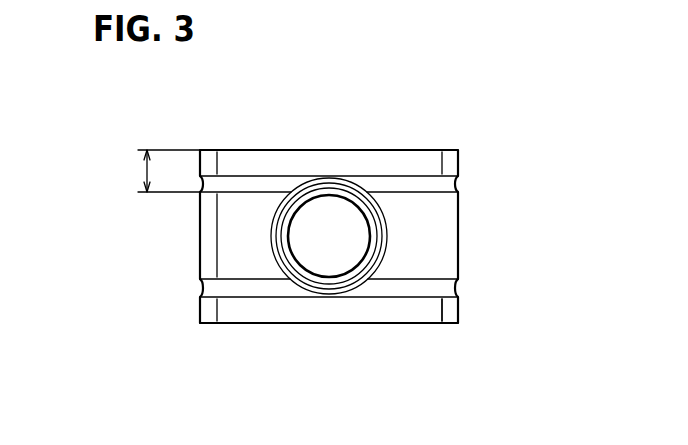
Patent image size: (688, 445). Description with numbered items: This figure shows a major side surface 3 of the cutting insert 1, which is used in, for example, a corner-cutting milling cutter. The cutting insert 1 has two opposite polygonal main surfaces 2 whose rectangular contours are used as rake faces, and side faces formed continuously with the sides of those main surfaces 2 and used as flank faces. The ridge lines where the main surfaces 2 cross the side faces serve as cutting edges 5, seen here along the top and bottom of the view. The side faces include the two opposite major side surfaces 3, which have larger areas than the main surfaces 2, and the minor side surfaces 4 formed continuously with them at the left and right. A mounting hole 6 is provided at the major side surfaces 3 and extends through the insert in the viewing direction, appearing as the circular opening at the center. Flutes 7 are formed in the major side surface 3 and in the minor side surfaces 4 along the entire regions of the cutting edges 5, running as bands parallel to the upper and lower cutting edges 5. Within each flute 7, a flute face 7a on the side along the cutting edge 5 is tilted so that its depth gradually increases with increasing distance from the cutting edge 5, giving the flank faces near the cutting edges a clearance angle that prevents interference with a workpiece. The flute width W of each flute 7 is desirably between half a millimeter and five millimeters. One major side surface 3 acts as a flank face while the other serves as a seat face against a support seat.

The cutting insert 1 is at (399, 150).
The main surface 2 is at (411, 326).
The major side surface 3 is at (238, 262).
The minor side surface 4 is at (200, 240).
The cutting edge 5 is at (302, 150).
The mounting hole 6 is at (315, 250).
The flute 7 is at (459, 183).
The flute face 7a is at (243, 163).
The flute width W is at (147, 172).